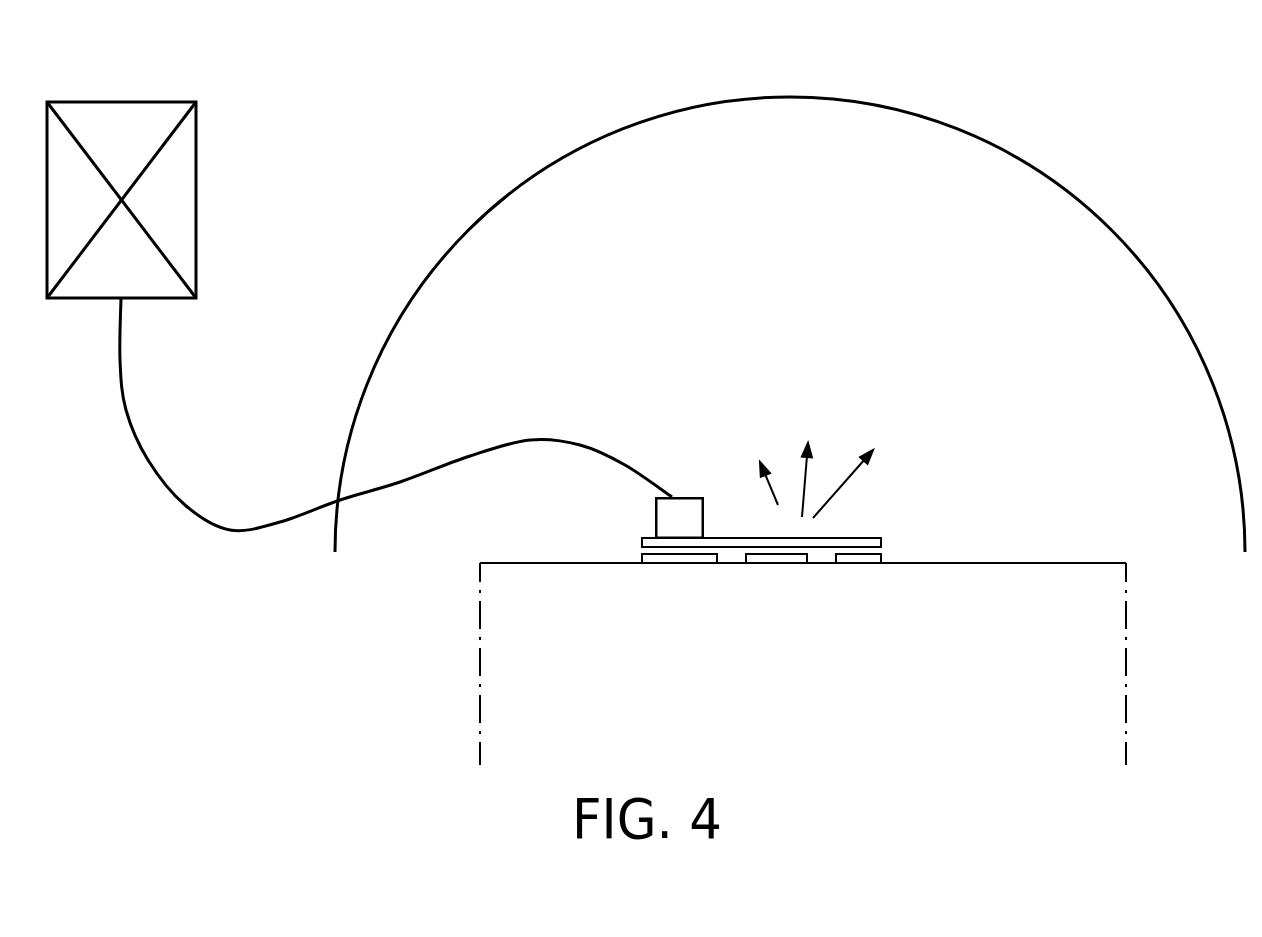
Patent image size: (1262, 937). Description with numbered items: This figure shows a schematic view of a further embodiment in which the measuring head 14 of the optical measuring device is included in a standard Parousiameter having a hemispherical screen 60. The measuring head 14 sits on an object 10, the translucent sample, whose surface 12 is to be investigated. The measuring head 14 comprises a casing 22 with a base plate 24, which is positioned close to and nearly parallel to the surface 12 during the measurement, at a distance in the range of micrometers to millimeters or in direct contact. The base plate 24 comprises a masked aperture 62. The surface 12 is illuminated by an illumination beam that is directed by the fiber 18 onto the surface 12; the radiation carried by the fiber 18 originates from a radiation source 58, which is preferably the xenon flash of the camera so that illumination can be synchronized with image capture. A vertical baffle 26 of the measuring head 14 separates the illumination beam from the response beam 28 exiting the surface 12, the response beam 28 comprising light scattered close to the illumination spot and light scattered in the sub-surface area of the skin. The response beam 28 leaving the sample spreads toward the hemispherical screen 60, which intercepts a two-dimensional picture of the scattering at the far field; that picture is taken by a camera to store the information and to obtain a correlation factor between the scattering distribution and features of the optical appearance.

The object 10 is at (782, 678).
The surface 12 is at (995, 563).
The measuring head 14 is at (673, 439).
The fiber 18 is at (130, 425).
The casing 22 is at (690, 498).
The base plate 24 is at (865, 538).
The vertical baffle 26 is at (703, 523).
The response beam 28 is at (817, 400).
The radiation source 58 is at (196, 200).
The hemispherical screen 60 is at (790, 95).
The masked aperture 62 is at (881, 559).